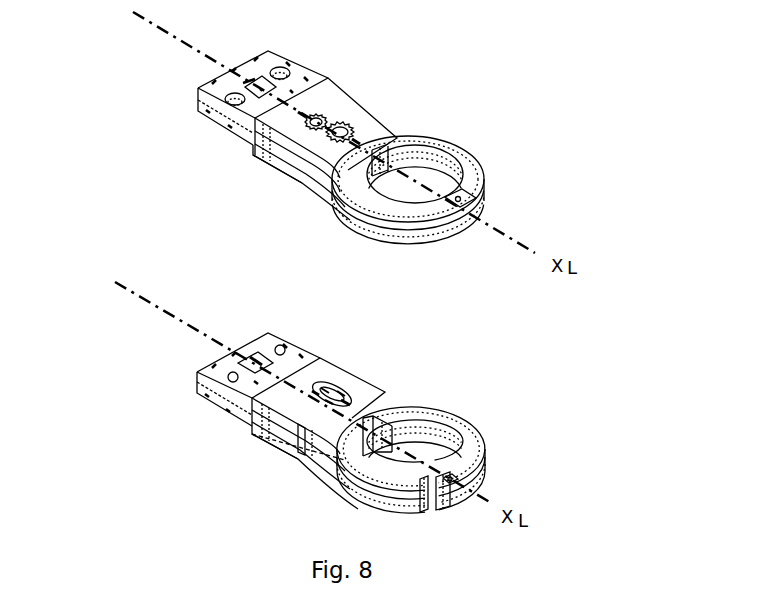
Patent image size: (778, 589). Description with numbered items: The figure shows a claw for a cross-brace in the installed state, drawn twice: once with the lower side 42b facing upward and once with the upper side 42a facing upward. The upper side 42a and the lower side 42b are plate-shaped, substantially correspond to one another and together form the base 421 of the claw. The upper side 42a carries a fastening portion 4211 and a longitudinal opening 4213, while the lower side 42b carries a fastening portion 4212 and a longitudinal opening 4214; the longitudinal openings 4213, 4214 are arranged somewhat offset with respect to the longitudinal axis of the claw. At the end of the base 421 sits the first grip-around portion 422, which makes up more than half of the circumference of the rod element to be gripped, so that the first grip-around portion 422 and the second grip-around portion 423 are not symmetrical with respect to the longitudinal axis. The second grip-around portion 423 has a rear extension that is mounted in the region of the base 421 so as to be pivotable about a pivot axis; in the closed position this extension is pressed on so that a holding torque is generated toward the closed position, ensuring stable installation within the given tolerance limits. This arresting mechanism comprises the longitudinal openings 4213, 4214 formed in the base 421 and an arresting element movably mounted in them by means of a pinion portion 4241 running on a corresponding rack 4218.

The base 421 is at (224, 152).
The fastening portion 4211 is at (222, 349).
The fastening portion 4212 is at (224, 76).
The longitudinal opening 4213 is at (346, 390).
The longitudinal opening 4214 is at (318, 132).
The rack 4218 is at (338, 394).
The upper side 42a is at (328, 357).
The lower side 42b is at (337, 83).
The first grip-around portion 422 is at (441, 240).
The second grip-around portion 423 is at (457, 160).
The pinion portion 4241 is at (370, 405).